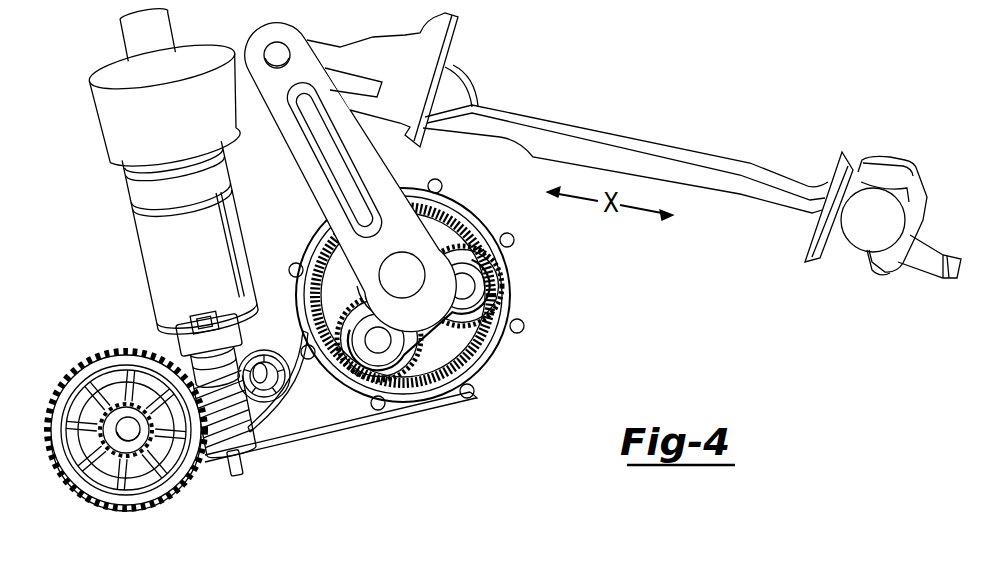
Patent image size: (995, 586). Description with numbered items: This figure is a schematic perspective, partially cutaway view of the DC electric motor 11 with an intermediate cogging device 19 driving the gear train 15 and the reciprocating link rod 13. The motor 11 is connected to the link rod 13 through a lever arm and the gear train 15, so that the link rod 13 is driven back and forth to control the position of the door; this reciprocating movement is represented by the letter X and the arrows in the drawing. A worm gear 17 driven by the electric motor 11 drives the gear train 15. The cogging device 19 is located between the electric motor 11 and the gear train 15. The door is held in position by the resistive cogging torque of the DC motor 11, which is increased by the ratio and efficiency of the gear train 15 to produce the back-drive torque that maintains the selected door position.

The DC electric motor 11 is at (131, 200).
The link rod 13 is at (628, 135).
The gear train 15 is at (485, 342).
The worm gear 17 is at (259, 415).
The cogging device 19 is at (182, 338).